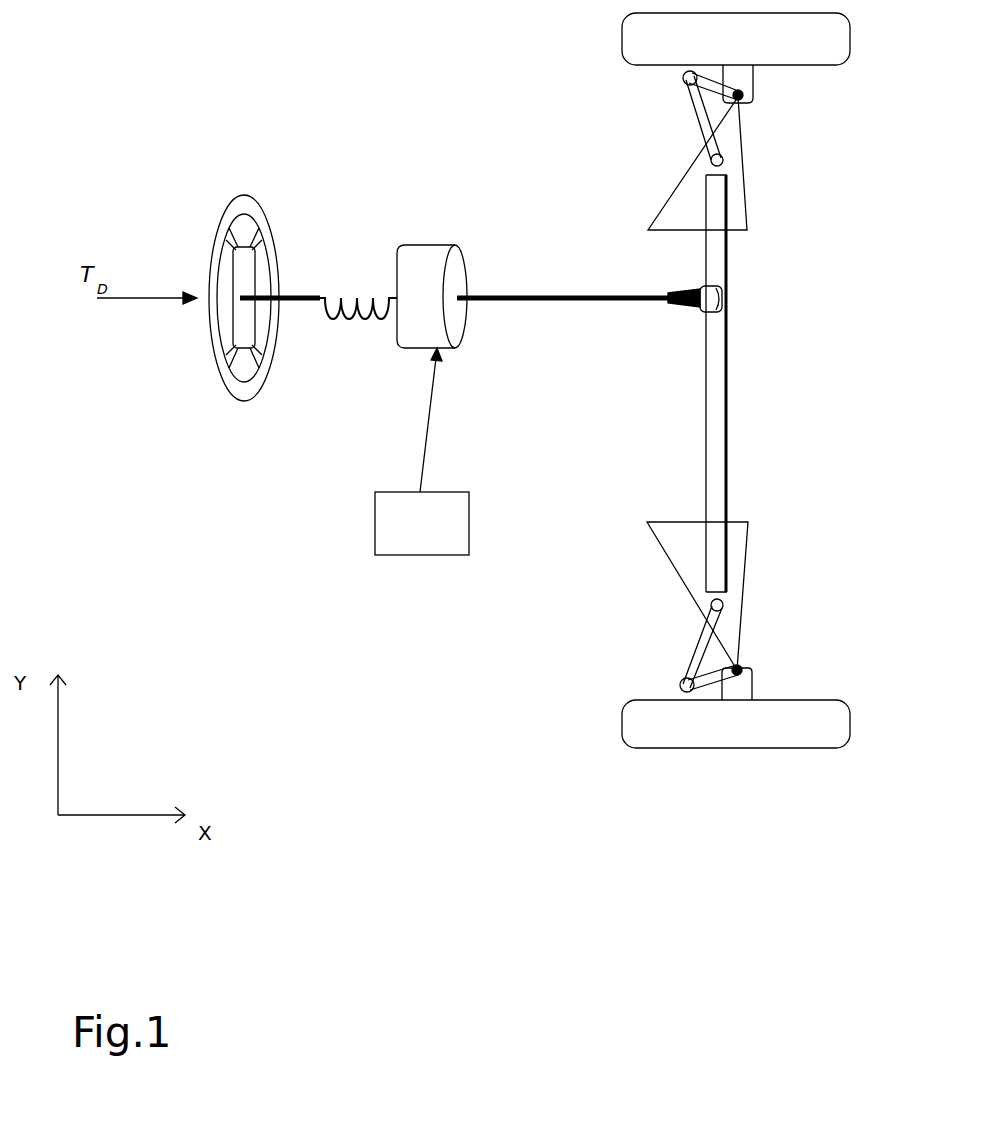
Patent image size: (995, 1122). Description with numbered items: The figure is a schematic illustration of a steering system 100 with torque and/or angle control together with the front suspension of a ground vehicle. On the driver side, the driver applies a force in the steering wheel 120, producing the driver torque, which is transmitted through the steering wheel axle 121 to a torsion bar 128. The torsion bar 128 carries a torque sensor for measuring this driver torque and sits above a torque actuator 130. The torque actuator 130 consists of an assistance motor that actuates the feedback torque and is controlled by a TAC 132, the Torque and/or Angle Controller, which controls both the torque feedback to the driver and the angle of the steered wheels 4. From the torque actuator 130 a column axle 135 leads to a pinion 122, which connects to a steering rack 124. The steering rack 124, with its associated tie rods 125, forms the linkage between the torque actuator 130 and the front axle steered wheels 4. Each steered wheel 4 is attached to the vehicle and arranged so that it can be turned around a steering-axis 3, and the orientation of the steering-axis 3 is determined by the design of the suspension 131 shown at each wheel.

The steering system 100 is at (446, 182).
The steering wheel 120 is at (215, 405).
The steering wheel axle 121 is at (297, 280).
The torsion bar 128 is at (368, 285).
The torque actuator 130 is at (410, 350).
The TAC (Torque and/or Angle Controller) 132 is at (405, 565).
The column axle 135 is at (535, 318).
The pinion 122 is at (735, 298).
The steering rack 124 is at (733, 428).
The tie rods 125 is at (688, 112).
The suspension 131 is at (668, 188).
The steering-axis 3 is at (752, 100).
The steered wheels 4 is at (797, 70).